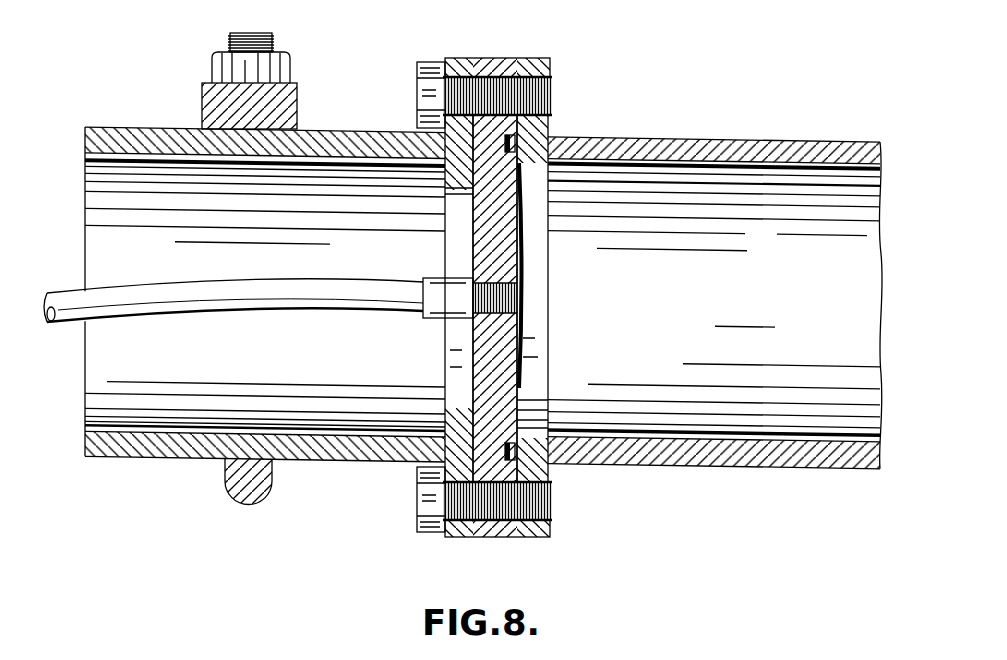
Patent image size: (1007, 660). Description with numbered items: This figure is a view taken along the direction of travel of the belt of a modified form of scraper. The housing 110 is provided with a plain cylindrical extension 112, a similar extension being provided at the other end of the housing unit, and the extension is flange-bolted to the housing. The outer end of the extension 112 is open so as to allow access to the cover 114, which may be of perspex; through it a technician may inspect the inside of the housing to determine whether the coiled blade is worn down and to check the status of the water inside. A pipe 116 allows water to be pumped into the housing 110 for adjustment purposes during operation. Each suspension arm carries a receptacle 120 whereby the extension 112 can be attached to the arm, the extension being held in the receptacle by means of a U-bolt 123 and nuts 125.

The housing 110 is at (694, 455).
The plain cylindrical extension 112 is at (158, 451).
The cover 114 is at (522, 388).
The pipe 116 is at (203, 317).
The receptacle 120 is at (293, 101).
The U-bolt 123 is at (243, 500).
The nuts 125 is at (214, 63).